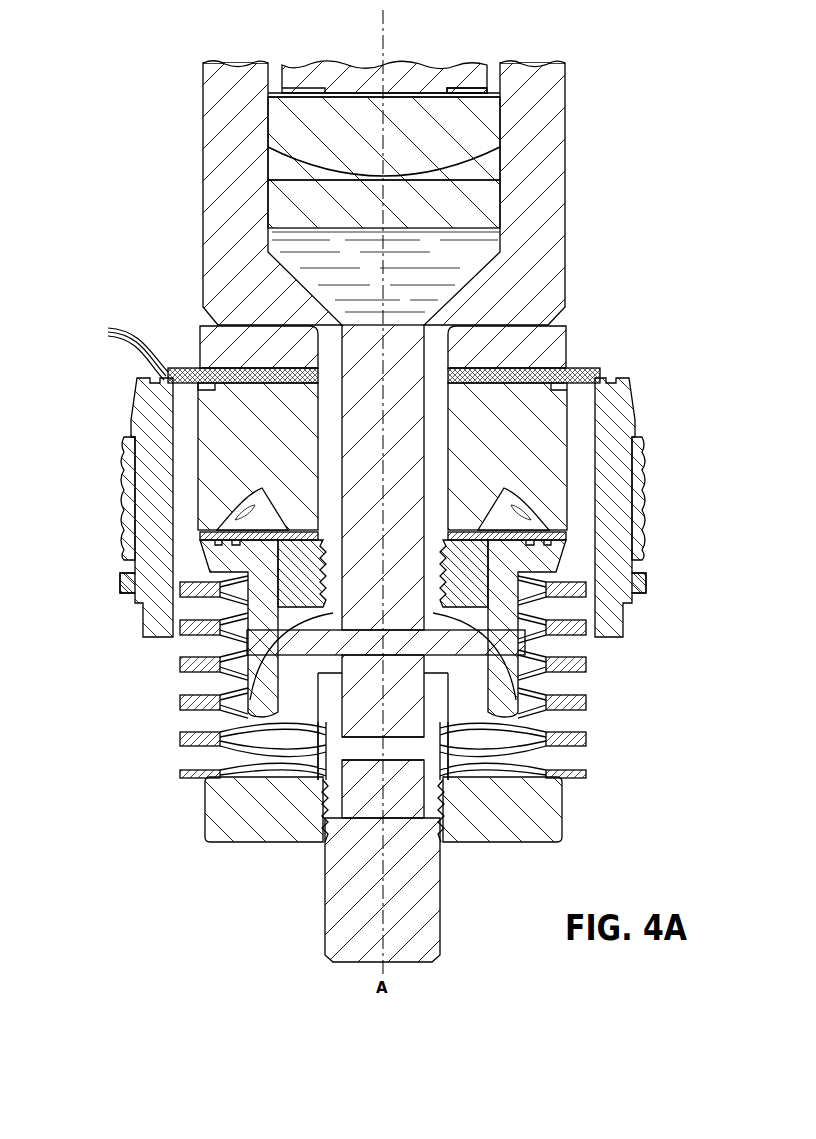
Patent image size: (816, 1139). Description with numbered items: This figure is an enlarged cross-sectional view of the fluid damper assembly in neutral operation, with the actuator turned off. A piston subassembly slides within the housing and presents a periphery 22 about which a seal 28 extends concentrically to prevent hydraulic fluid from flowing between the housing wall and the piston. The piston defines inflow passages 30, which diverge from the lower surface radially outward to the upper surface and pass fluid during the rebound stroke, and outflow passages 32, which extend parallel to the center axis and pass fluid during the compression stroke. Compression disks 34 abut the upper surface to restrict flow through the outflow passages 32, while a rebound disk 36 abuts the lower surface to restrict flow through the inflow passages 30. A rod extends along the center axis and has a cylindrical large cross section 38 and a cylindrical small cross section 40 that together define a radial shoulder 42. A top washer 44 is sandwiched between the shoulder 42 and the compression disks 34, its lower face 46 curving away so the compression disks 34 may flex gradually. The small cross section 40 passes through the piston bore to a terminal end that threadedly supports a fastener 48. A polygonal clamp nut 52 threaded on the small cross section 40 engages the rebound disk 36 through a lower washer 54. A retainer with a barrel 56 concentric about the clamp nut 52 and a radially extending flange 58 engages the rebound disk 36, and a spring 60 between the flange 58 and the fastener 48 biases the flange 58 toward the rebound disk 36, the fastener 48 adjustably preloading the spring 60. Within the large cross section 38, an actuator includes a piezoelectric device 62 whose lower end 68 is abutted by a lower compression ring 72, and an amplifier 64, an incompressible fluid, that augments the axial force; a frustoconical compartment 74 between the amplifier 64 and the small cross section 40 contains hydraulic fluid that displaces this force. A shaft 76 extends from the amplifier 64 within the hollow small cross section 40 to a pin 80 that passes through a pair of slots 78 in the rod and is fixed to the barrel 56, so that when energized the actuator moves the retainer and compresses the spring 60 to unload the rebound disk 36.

The periphery 22 is at (645, 490).
The seal 28 is at (130, 475).
The inflow passages 30 is at (220, 518).
The outflow passages 32 is at (185, 415).
The compression disks 34 is at (128, 353).
The rebound disk 36 is at (530, 545).
The large cross section 38 is at (232, 130).
The small cross section 40 is at (330, 360).
The shoulder 42 is at (555, 273).
The top washer 44 is at (555, 335).
The lower face 46 is at (555, 368).
The fastener 48 is at (555, 807).
The clamp nut 52 is at (255, 597).
The lower washer 54 is at (190, 570).
The barrel 56 is at (520, 625).
The flange 58 is at (640, 572).
The spring 60 is at (550, 735).
The piezoelectric device 62 is at (328, 78).
The amplifier 64 is at (305, 200).
The lower end 68 is at (457, 73).
The lower compression ring 72 is at (455, 130).
The compartment 74 is at (452, 292).
The shaft 76 is at (405, 452).
The slots 78 is at (247, 690).
The pin 80 is at (225, 715).